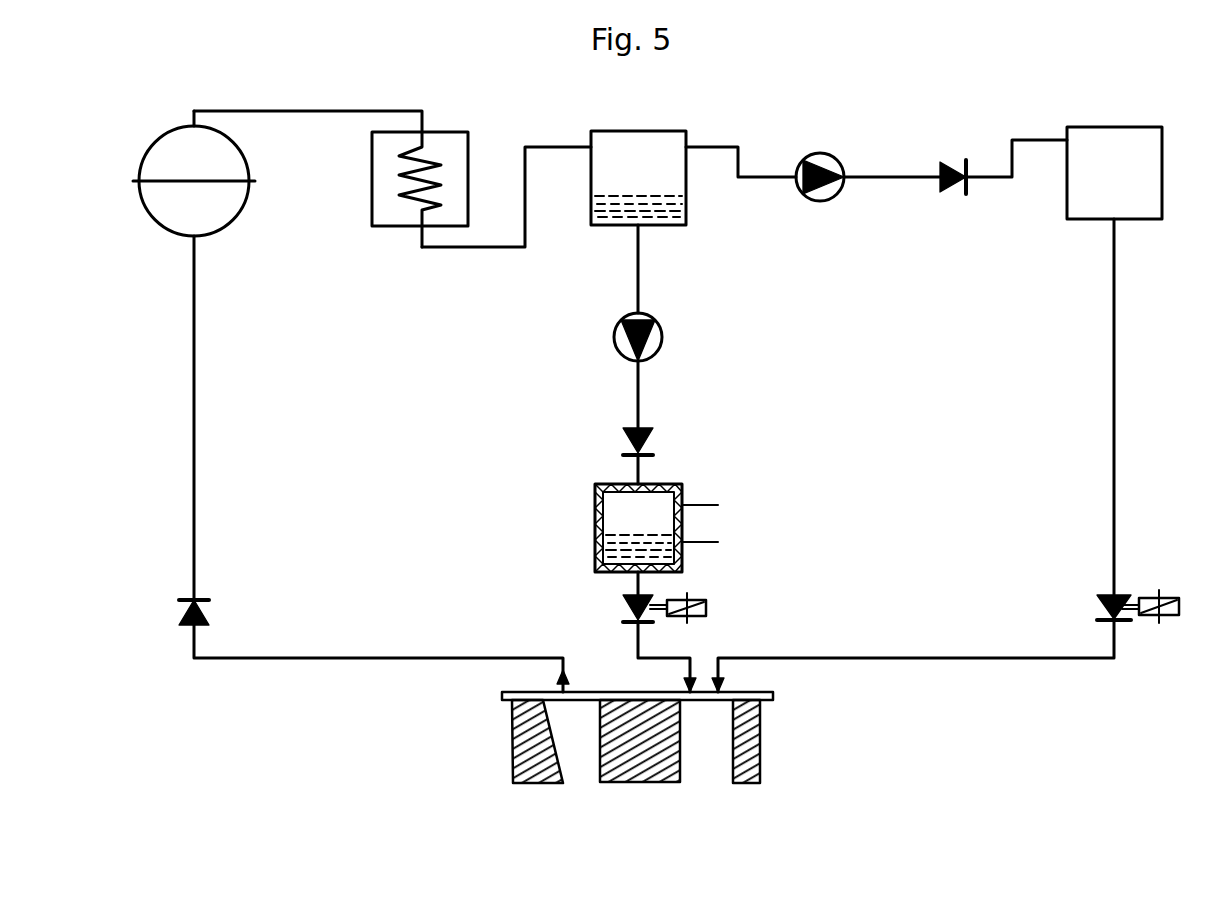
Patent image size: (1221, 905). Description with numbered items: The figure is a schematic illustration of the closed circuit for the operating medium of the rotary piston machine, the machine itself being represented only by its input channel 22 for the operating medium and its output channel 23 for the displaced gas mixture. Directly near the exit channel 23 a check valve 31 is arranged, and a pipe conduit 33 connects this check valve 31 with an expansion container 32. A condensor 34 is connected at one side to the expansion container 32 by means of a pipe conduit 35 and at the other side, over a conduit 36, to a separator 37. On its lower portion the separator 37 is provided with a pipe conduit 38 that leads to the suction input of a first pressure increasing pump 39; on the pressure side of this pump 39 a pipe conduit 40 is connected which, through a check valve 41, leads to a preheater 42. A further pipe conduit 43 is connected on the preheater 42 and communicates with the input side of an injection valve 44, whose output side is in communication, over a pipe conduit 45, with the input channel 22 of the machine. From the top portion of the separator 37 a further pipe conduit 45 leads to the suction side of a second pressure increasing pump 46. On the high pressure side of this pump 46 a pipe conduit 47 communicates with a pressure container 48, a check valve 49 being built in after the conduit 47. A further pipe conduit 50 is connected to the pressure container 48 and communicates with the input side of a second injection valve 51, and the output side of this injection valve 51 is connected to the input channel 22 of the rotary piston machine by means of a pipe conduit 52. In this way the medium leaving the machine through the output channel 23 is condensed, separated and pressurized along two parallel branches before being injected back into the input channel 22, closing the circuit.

The input channel 22 is at (680, 741).
The output channel 23 is at (637, 737).
The check valve 31 is at (374, 630).
The expansion container 32 is at (192, 157).
The pipe conduit 33 is at (222, 418).
The condensor 34 is at (426, 162).
The pipe conduit 35 is at (308, 104).
The conduit 36 is at (506, 162).
The separator 37 is at (639, 150).
The pipe conduit 38 is at (680, 269).
The first pressure increasing pump 39 is at (668, 328).
The pipe conduit 40 is at (679, 393).
The check valve 41 is at (671, 446).
The preheater 42 is at (663, 522).
The pipe conduit 43 is at (636, 587).
The injection valve 44 is at (710, 594).
The pipe conduit 45 is at (542, 637).
The second pressure increasing pump 46 is at (827, 138).
The pipe conduit 47 is at (892, 126).
The pressure container 48 is at (1114, 146).
The check valve 49 is at (1003, 135).
The pipe conduit 50 is at (1139, 407).
The injection valve 51 is at (1159, 592).
The pipe conduit 52 is at (913, 654).